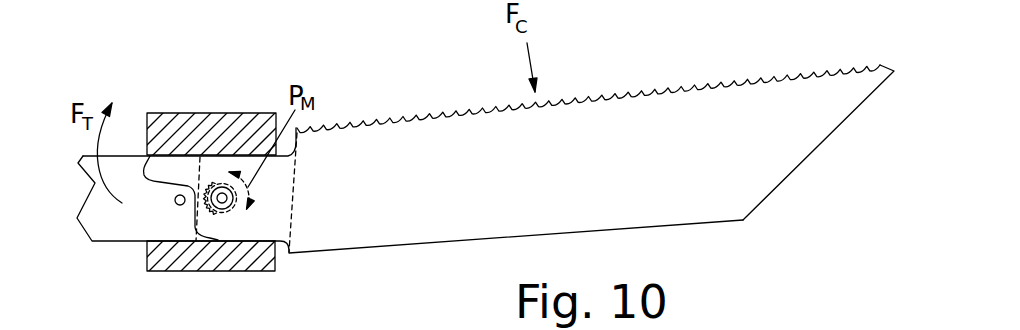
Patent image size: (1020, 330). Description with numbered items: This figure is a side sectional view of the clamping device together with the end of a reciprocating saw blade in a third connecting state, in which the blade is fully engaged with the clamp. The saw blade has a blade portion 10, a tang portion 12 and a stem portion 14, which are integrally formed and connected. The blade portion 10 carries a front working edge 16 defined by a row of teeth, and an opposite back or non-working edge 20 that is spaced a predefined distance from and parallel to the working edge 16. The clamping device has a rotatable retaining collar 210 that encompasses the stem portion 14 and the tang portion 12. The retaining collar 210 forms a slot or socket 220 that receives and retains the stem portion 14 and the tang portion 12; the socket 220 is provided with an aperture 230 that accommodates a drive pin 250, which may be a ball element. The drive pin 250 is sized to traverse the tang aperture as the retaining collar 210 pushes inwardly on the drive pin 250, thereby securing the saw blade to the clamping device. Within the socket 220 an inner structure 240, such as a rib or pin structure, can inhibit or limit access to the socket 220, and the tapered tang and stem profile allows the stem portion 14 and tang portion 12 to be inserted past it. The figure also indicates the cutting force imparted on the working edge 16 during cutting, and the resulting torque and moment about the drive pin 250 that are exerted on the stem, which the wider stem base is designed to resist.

The blade portion 10 is at (417, 177).
The tang portion 12 is at (280, 200).
The stem portion 14 is at (157, 168).
The working edge 16 is at (383, 118).
The non-working edge 20 is at (470, 240).
The retaining collar 210 is at (185, 113).
The socket 220 is at (150, 230).
The aperture 230 is at (223, 193).
The inner structure 240 is at (177, 203).
The drive pin 250 is at (230, 204).